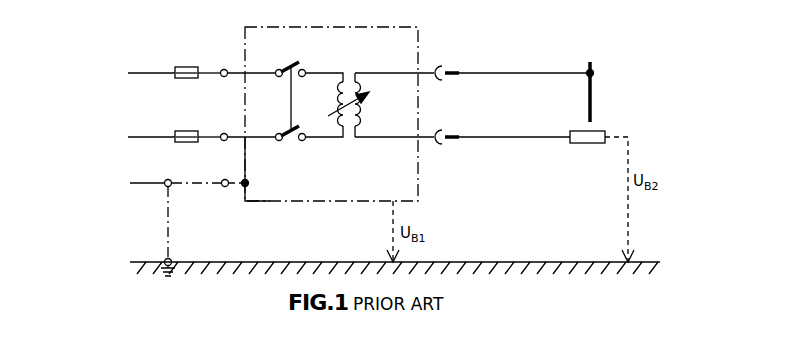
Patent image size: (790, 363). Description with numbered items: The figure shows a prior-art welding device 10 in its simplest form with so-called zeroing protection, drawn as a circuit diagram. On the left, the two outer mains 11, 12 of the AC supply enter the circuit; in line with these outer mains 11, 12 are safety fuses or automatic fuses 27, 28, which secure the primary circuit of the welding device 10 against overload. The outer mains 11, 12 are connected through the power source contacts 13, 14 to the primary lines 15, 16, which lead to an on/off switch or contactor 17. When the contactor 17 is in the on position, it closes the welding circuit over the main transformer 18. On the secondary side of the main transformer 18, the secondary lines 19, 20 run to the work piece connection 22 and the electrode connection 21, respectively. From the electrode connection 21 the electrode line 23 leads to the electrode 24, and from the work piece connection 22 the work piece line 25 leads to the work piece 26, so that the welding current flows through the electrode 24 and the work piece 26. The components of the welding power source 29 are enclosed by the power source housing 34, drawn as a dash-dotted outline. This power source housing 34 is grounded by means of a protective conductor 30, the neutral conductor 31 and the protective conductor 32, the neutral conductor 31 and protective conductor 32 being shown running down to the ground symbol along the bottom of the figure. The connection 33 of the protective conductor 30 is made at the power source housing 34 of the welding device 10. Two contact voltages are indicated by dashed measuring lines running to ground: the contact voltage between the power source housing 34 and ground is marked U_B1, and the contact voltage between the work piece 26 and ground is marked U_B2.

The welding device 10 is at (90, 168).
The outer main 11 is at (136, 139).
The outer main 12 is at (134, 70).
The power source contact 13 is at (224, 69).
The power source contact 14 is at (223, 141).
The primary line 15 is at (273, 77).
The primary line 16 is at (274, 140).
The on/off switch or contactor 17 is at (293, 97).
The main transformer 18 is at (347, 139).
The secondary line 19 is at (399, 140).
The secondary line 20 is at (400, 76).
The electrode connection 21 is at (444, 79).
The work piece connection 22 is at (444, 143).
The electrode line 23 is at (552, 76).
The electrode 24 is at (592, 99).
The work piece line 25 is at (550, 140).
The work piece 26 is at (588, 145).
The safety fuse or automatic fuse 27 is at (193, 67).
The safety fuse or automatic fuse 28 is at (189, 143).
The welding power source 29 is at (324, 200).
The protective conductor 30 is at (215, 186).
The neutral conductor 31 is at (136, 185).
The protective conductor 32 is at (170, 258).
The connection of the protective conductor 33 is at (241, 187).
The power source housing 34 is at (274, 200).